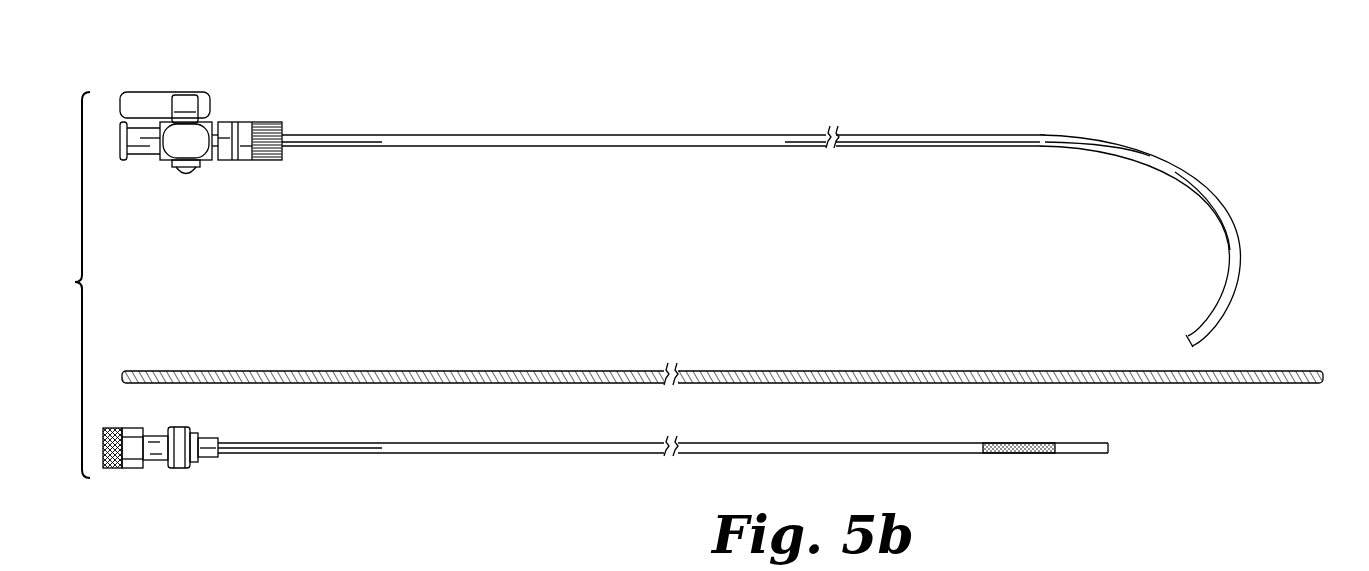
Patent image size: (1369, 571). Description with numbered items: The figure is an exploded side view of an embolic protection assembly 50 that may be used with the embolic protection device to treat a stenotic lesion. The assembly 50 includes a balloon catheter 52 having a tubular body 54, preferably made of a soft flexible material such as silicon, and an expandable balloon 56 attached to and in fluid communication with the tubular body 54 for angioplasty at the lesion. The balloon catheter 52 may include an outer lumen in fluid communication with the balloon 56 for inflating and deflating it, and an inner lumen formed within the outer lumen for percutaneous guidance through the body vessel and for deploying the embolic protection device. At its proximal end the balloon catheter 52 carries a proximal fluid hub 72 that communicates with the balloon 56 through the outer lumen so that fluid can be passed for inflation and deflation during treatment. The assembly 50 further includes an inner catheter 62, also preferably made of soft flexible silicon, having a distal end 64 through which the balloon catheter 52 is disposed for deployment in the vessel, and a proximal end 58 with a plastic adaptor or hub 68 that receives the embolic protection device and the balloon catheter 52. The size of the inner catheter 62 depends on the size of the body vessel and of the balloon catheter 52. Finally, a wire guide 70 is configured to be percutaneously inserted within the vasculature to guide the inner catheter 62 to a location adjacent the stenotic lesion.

The embolic protection assembly 50 is at (250, 66).
The balloon catheter 52 is at (370, 442).
The tubular body 54 is at (285, 445).
The expandable balloon 56 is at (1020, 447).
The proximal end 58 is at (282, 128).
The inner catheter 62 is at (680, 134).
The distal end 64 is at (1180, 346).
The plastic adaptor or hub 68 is at (205, 148).
The wire guide 70 is at (540, 372).
The proximal fluid hub 72 is at (180, 453).